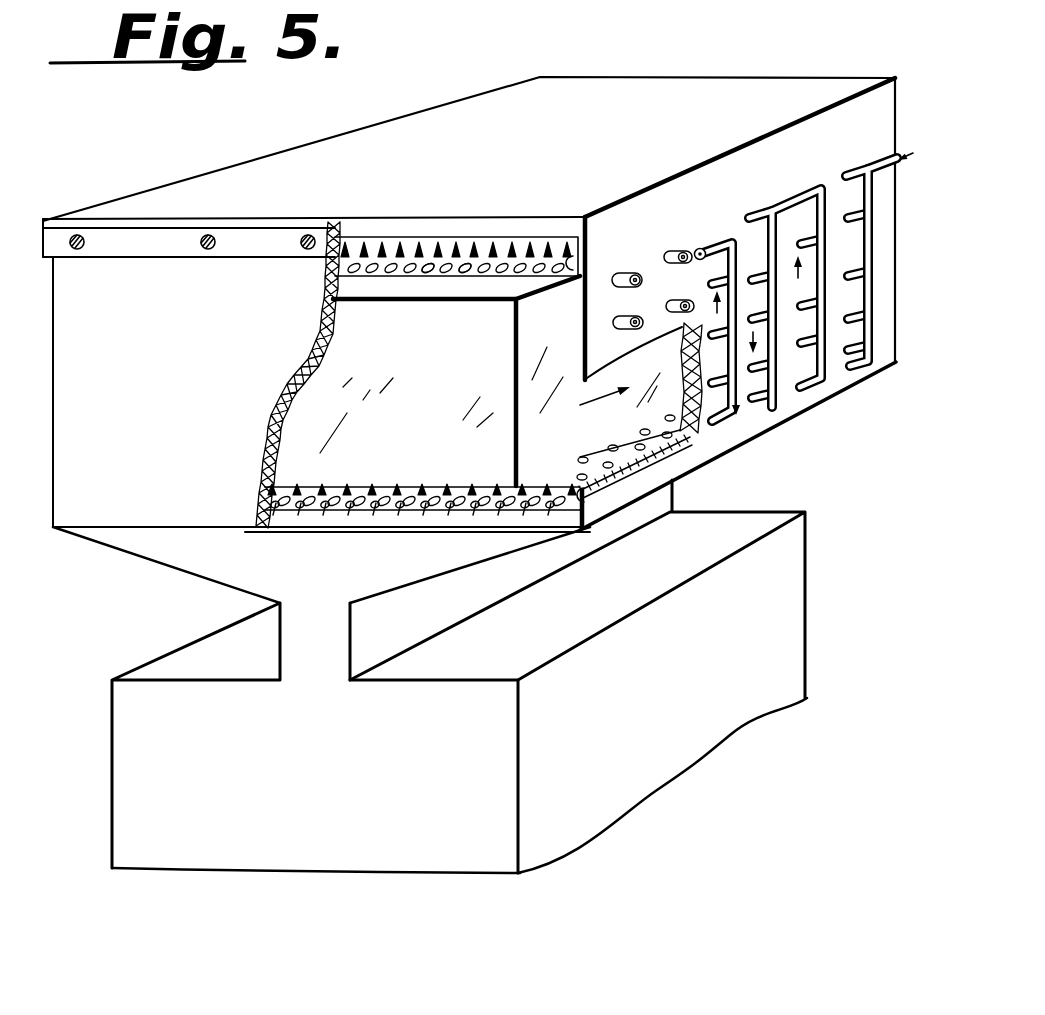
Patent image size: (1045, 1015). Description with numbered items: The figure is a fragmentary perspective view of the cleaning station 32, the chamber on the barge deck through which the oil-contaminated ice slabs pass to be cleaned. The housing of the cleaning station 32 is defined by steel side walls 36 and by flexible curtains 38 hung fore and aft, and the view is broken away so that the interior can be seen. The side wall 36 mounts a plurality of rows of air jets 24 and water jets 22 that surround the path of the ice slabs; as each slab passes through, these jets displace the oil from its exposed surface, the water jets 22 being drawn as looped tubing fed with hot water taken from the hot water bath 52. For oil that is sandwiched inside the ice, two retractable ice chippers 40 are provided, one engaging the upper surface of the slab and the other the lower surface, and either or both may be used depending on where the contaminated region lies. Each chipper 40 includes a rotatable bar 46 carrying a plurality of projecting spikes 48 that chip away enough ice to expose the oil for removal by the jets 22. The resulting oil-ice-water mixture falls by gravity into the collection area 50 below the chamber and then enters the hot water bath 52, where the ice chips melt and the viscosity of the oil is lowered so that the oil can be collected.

The cleaning station 32 is at (340, 130).
The flexible curtains 38 is at (190, 344).
The steel side walls 36 is at (683, 227).
The water jets 22 is at (713, 234).
The air jets 24 is at (621, 272).
The retractable ice chipper 40 is at (398, 274).
The rotatable bar 46 is at (434, 278).
The projecting spikes 48 is at (477, 278).
The collection area 50 is at (350, 579).
The hot water bath 52 is at (330, 764).